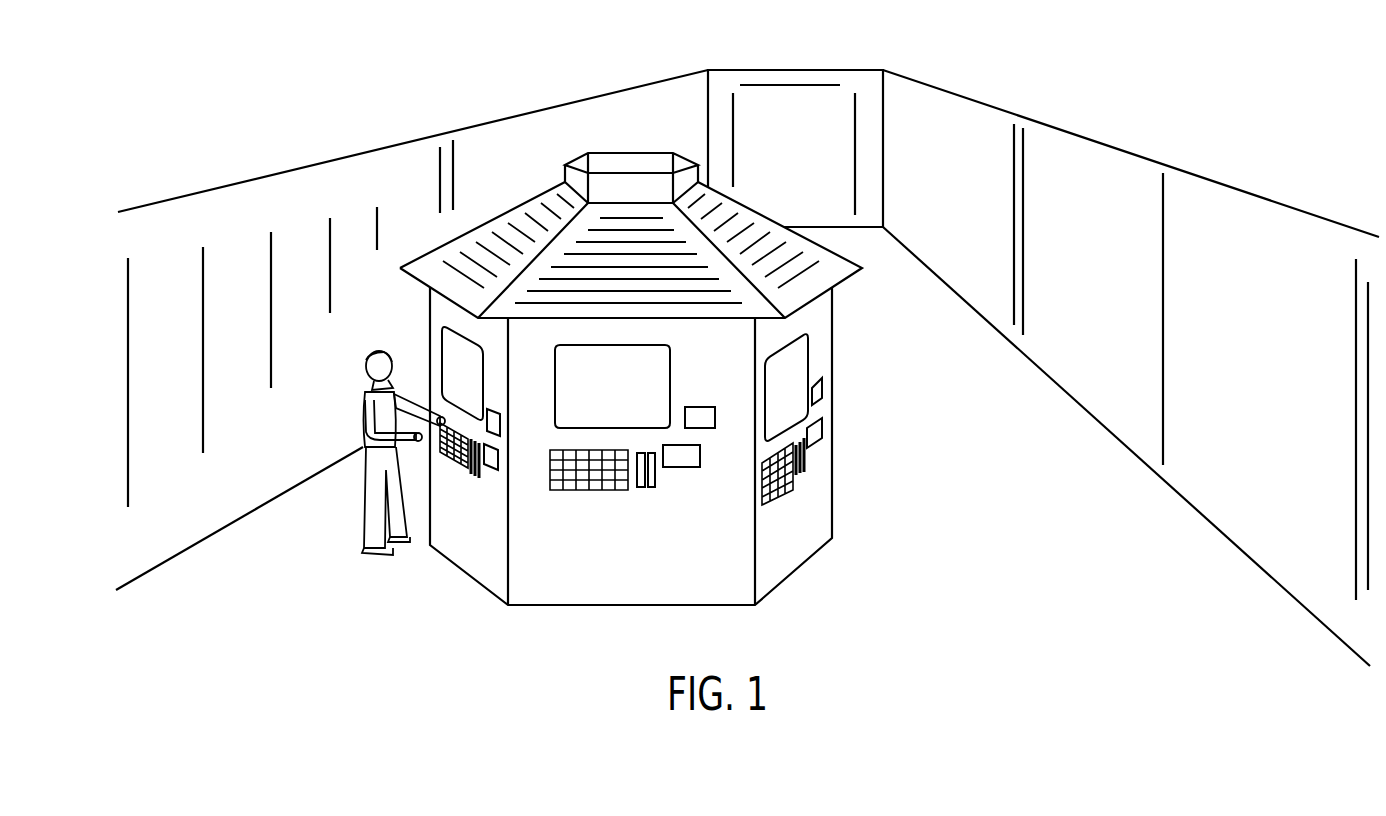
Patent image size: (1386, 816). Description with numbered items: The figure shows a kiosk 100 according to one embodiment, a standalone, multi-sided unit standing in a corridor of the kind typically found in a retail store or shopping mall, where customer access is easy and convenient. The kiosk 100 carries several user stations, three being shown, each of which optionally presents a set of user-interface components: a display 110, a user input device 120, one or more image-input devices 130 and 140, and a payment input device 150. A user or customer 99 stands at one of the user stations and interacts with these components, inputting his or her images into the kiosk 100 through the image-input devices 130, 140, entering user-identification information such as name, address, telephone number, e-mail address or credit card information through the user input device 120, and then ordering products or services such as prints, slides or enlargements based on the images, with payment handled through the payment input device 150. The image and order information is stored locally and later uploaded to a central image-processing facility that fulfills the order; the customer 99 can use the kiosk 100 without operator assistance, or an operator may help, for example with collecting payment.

The user or customer 99 is at (362, 409).
The kiosk 100 is at (915, 181).
The display 110 is at (457, 360).
The user input device 120 is at (587, 492).
The image-input device 130 is at (683, 467).
The image-input device 140 is at (698, 407).
The payment input device 150 is at (645, 490).